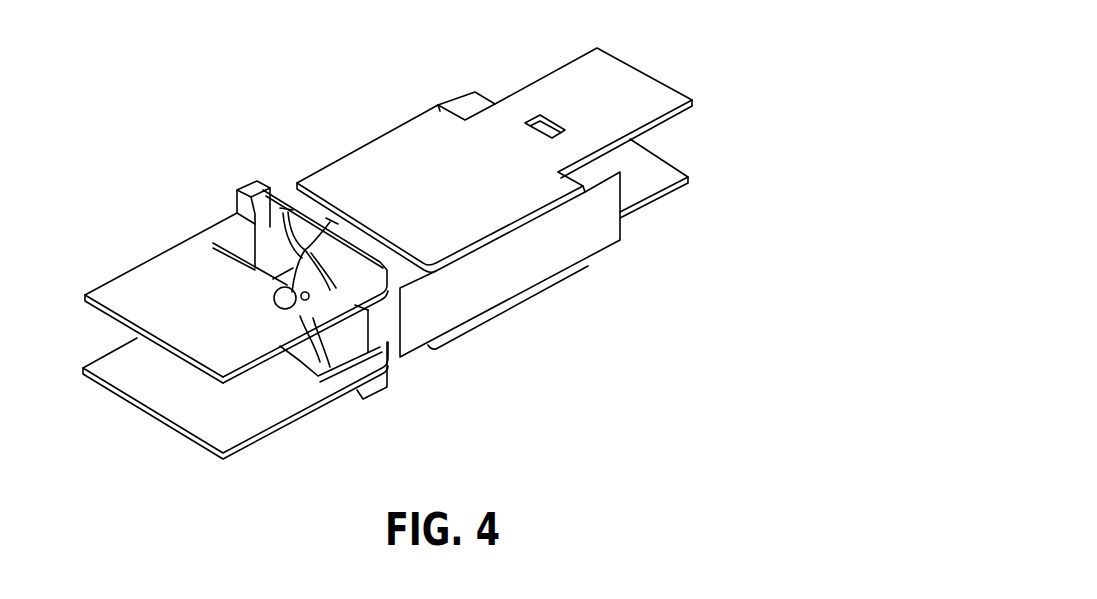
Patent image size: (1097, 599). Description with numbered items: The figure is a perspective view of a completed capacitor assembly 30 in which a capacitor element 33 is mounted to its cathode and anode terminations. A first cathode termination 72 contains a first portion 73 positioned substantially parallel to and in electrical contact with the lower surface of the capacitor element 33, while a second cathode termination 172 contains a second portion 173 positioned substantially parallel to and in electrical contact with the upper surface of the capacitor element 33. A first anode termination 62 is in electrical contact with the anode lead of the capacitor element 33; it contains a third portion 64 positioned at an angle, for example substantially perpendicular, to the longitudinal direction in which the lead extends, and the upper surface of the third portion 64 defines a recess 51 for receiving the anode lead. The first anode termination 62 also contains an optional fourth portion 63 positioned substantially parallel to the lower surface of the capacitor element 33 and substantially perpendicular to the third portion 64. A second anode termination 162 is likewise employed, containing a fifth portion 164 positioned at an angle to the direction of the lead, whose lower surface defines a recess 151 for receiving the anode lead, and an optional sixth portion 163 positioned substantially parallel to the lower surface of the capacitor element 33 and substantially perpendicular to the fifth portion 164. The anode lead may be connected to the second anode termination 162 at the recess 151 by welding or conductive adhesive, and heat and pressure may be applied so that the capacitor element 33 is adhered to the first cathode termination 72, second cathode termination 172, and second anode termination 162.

The capacitor assembly 30 is at (730, 160).
The capacitor element 33 is at (537, 252).
The recess 51 is at (310, 292).
The first anode termination 62 is at (227, 462).
The fourth portion 63 is at (206, 416).
The third portion 64 is at (352, 345).
The first cathode termination 72 is at (655, 205).
The first portion 73 is at (497, 314).
The recess 151 is at (312, 288).
The second anode termination 162 is at (125, 248).
The sixth portion 163 is at (207, 323).
The fifth portion 164 is at (272, 227).
The second cathode termination 172 is at (623, 53).
The second portion 173 is at (482, 210).